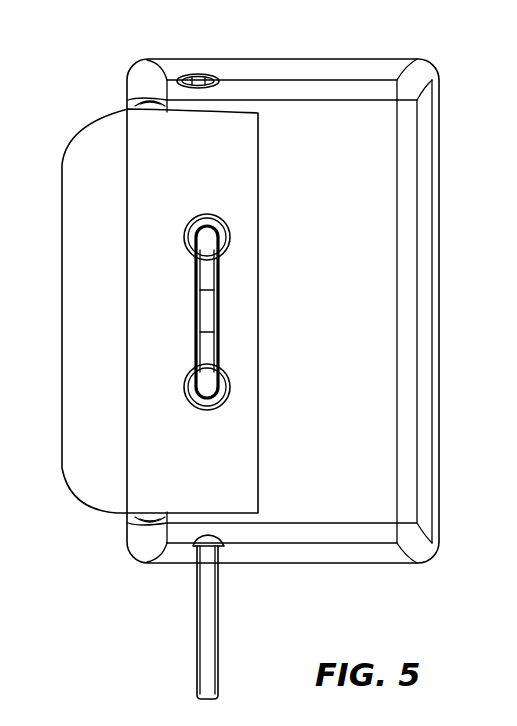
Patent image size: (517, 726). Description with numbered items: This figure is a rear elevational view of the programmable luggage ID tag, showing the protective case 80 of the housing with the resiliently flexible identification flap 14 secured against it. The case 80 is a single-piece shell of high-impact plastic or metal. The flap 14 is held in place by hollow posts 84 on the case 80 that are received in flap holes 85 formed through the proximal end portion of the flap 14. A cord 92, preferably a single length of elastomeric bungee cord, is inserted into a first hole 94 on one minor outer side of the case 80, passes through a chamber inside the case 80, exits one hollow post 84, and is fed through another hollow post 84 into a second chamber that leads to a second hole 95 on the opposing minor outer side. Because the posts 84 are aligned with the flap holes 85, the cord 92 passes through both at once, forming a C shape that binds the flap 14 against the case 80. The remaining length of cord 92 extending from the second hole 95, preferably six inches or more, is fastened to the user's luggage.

The identification flap 14 is at (85, 106).
The protective case 80 is at (368, 296).
The hollow post 84 is at (198, 216).
The flap hole 85 is at (187, 240).
The cord 92 is at (197, 648).
The first hole 94 is at (200, 75).
The second hole 95 is at (205, 548).